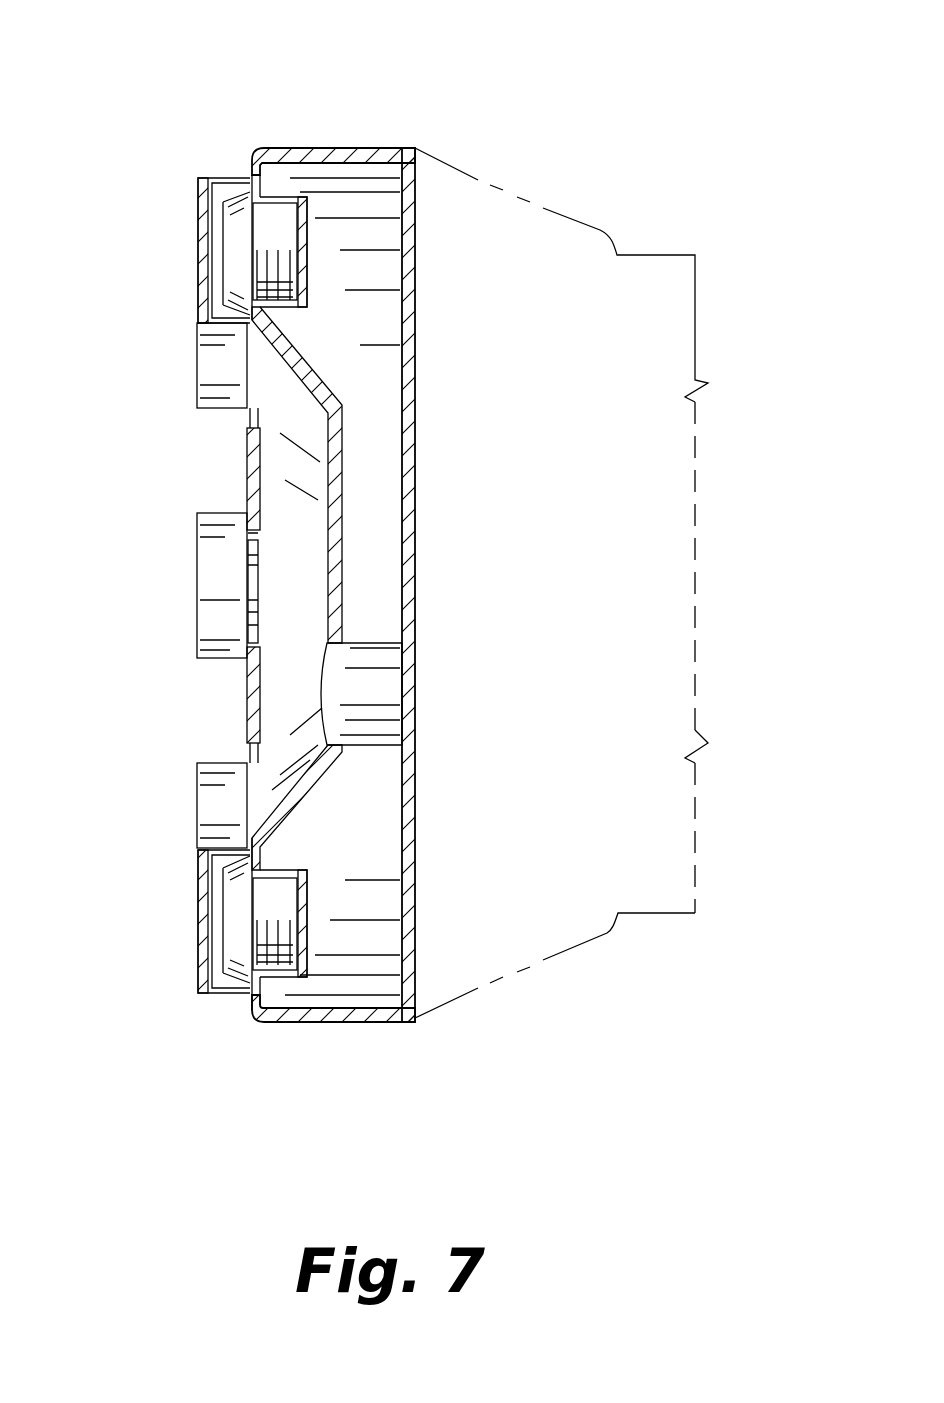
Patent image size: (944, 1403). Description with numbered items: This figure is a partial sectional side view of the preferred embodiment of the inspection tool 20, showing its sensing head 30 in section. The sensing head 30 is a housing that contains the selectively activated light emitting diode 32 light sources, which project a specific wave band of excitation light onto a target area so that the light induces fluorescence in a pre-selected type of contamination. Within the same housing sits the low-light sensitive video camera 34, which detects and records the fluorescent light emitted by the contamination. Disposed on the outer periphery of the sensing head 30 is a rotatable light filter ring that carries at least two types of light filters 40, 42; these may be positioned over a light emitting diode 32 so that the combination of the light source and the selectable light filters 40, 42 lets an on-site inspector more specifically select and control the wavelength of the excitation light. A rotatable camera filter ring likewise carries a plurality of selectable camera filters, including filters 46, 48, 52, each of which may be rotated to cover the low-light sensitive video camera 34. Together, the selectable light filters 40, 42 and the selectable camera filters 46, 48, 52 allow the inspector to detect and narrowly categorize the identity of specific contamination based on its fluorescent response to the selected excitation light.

The inspection tool 20 is at (572, 605).
The sensing head 30 is at (348, 147).
The light emitting diode 32 is at (207, 222).
The low-light sensitive video camera 34 is at (405, 700).
The light filter 40 is at (200, 372).
The light filter 42 is at (200, 298).
The camera filter 46 is at (243, 580).
The camera filter 48 is at (247, 688).
The camera filter 52 is at (247, 470).